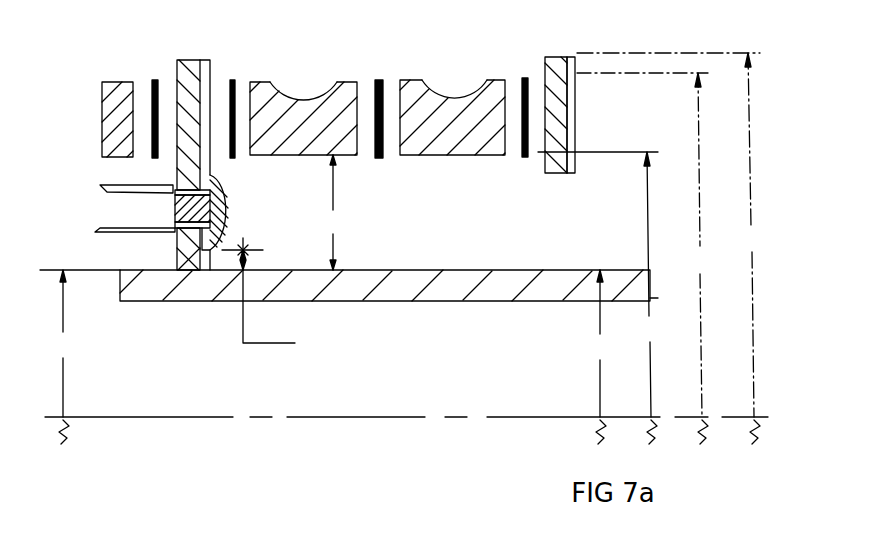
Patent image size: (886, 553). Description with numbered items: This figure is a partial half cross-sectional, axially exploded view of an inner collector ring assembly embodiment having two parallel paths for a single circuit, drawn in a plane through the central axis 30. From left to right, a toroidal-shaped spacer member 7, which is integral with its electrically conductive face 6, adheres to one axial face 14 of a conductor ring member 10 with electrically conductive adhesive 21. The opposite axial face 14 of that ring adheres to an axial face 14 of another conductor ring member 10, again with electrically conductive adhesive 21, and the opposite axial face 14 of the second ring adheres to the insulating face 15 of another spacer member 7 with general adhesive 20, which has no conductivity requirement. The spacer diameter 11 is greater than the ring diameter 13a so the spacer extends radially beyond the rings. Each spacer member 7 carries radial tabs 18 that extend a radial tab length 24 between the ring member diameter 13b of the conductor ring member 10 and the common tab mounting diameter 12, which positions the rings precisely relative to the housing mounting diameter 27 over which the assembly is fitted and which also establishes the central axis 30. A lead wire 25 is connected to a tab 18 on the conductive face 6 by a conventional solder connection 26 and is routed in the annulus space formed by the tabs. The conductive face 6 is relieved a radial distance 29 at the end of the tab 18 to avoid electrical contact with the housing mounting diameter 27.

The electrically conductive face 6 is at (208, 72).
The spacer member 7 is at (185, 85).
The conductor ring member 10 is at (348, 145).
The spacer diameter 11 is at (672, 235).
The common tab mounting diameter 12 is at (80, 343).
The ring diameter 13a is at (652, 245).
The ring member diameter 13b is at (606, 284).
The axial face 14 is at (250, 93).
The insulating face 15 is at (178, 105).
The radial tab 18 is at (172, 271).
The general adhesive 20 is at (155, 82).
The electrically conductive adhesive 21 is at (233, 158).
The radial tab length 24 is at (341, 212).
The lead wire 25 is at (140, 222).
The solder connection 26 is at (230, 210).
The housing mounting diameter 27 is at (597, 343).
The radial distance 29 is at (278, 298).
The central axis 30 is at (532, 417).